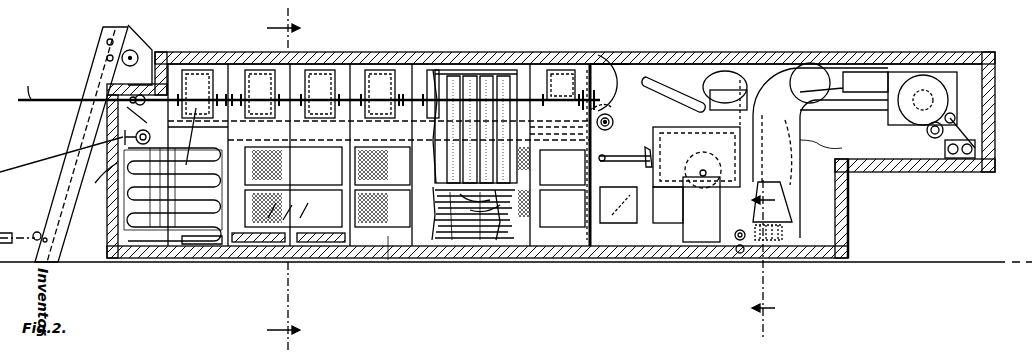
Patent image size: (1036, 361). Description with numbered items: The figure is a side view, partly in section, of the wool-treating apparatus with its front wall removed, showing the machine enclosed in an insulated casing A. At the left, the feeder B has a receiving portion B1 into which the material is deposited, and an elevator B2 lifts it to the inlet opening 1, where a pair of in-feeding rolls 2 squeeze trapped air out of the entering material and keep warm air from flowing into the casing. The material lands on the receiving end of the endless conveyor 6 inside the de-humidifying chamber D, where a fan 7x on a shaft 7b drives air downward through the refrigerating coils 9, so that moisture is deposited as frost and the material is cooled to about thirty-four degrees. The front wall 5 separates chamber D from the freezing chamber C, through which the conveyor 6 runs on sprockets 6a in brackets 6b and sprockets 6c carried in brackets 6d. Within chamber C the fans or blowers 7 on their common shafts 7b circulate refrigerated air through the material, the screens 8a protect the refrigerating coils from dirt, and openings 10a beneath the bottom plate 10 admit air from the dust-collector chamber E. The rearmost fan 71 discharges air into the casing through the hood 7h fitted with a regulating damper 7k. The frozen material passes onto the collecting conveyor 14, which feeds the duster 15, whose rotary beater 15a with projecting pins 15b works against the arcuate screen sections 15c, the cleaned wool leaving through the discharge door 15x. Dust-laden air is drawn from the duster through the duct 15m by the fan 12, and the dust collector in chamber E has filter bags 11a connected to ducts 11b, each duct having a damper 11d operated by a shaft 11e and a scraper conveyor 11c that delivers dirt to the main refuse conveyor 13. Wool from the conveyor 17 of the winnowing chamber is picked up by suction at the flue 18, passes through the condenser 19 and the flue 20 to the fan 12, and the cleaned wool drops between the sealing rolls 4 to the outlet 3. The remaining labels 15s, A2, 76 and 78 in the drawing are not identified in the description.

The elevator B2 is at (90, 68).
The inlet opening 1 is at (140, 78).
The shaft 7b is at (48, 96).
The in-feeding rolls 2 is at (142, 109).
The brackets 6b is at (118, 137).
The receiving portion of feeder B1 is at (18, 165).
The sprockets 6a is at (95, 183).
The feeder B is at (50, 237).
The refrigerating coils 9 is at (150, 233).
The de-humidifying chamber D is at (205, 246).
The conveyor 6 is at (640, 86).
The fan 7x is at (188, 70).
The fans or blowers 7 is at (258, 76).
The bottom plate 10 is at (293, 155).
The openings 10a is at (296, 215).
The front wall 5 is at (236, 244).
The screens 8a is at (372, 220).
The freezing chamber C is at (388, 262).
The casing A is at (432, 262).
The filter bags 11a is at (500, 78).
The rearmost fans 71 is at (565, 74).
The regulating damper 7k is at (618, 66).
The hood 7h is at (626, 63).
The collecting conveyor 14 is at (580, 138).
The damper 11d is at (586, 180).
The ducts 11b is at (448, 228).
The scraper conveyors 11c is at (480, 228).
The dust collector chamber E is at (508, 213).
The brackets 6d is at (616, 111).
The sprockets 6c is at (613, 122).
The duster 15 is at (676, 130).
The rotary beater 15a is at (648, 166).
The disc 15s is at (703, 170).
The projecting pins 15b is at (694, 91).
The duct 15m is at (670, 88).
The fan 12 is at (737, 90).
The flue 20 is at (767, 98).
The flue 18 is at (814, 70).
The condenser 19 is at (920, 70).
The discharge sealing rolls 4 is at (967, 140).
The outlet 3 is at (972, 186).
The wall A2 is at (900, 172).
The arcuate screen sections 15c is at (826, 132).
The flap 76 is at (835, 139).
The step wall 78 is at (838, 166).
The shaft 11e is at (668, 205).
The discharge door 15x is at (772, 204).
The main refuse conveyor 13 is at (760, 244).
The conveyor 17 is at (798, 248).